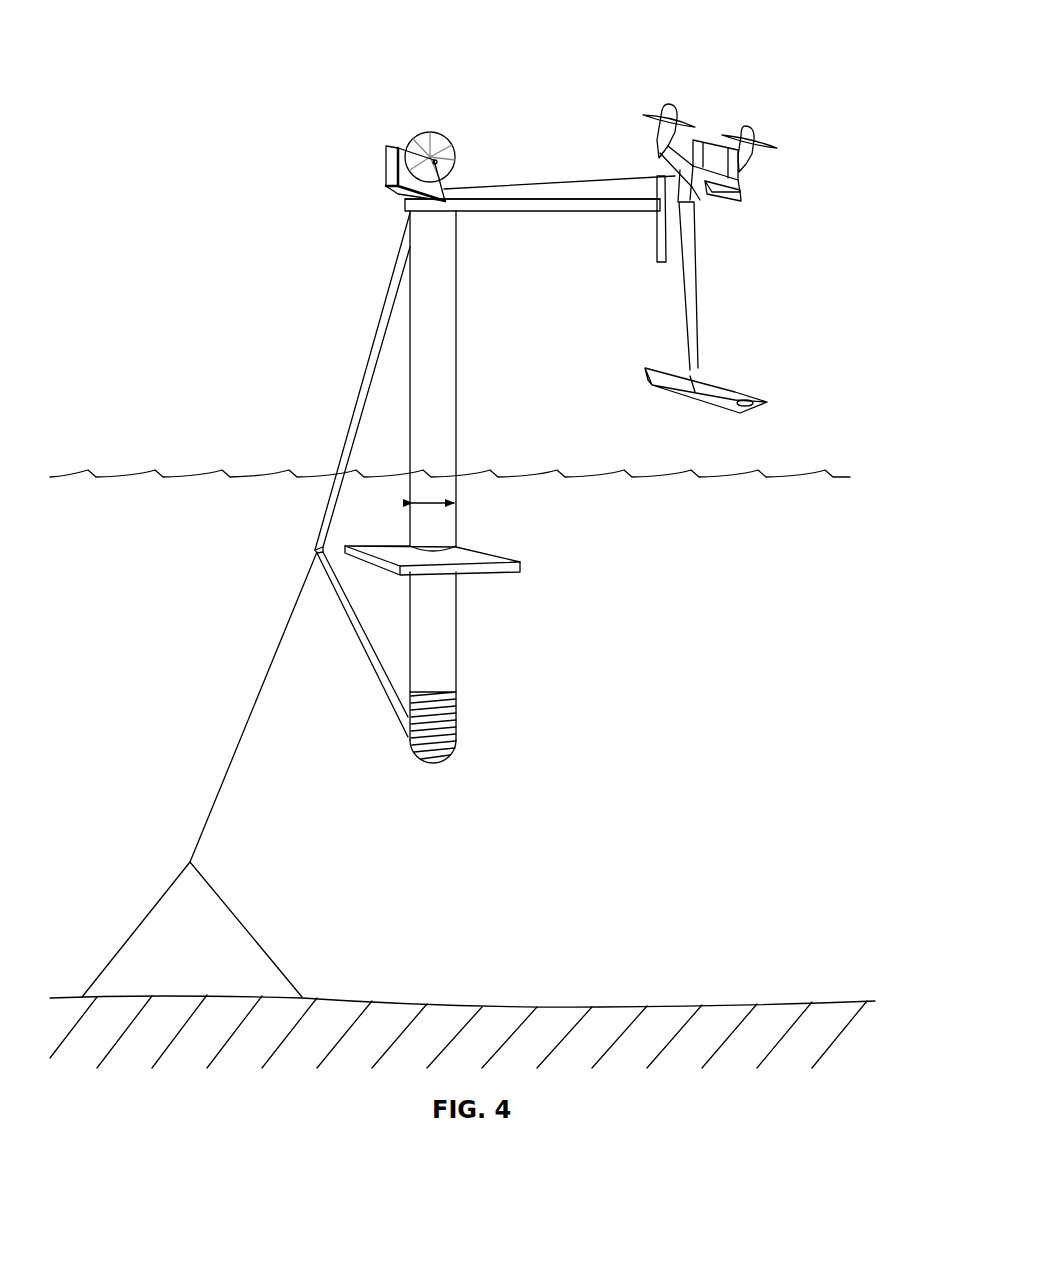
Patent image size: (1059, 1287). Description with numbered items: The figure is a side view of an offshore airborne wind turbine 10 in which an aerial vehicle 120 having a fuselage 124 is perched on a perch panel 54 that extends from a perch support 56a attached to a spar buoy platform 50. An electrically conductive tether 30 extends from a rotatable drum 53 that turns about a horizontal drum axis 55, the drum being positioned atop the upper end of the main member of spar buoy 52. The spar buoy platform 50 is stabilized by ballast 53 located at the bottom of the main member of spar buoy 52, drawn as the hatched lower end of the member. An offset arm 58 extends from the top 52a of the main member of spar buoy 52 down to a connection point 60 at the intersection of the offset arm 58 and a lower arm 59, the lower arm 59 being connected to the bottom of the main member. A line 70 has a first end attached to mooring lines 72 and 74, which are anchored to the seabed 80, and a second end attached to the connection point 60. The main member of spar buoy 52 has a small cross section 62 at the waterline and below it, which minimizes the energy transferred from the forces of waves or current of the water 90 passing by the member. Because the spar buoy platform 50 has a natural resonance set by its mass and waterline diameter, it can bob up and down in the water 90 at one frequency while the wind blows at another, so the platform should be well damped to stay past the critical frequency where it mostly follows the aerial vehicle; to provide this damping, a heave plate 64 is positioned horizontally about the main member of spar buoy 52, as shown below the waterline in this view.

The offshore airborne wind turbine 10 is at (316, 40).
The electrically conductive tether 30 is at (536, 178).
The spar buoy platform 50 is at (316, 224).
The main member of spar buoy 52 is at (447, 358).
The top of main member 52a is at (440, 215).
The rotatable drum / ballast 53 is at (436, 148).
The perch panel 54 is at (656, 243).
The horizontal drum axis 55 is at (434, 158).
The perch support 56a is at (567, 207).
The offset arm 58 is at (372, 340).
The lower arm 59 is at (358, 650).
The connection point 60 is at (315, 552).
The small cross section 62 is at (433, 503).
The heave plate 64 is at (518, 566).
The line 70 is at (235, 760).
The mooring line 72 is at (140, 920).
The mooring line 74 is at (250, 935).
The seabed 80 is at (238, 1003).
The water 90 is at (142, 500).
The aerial vehicle 120 is at (780, 99).
The fuselage 124 is at (699, 296).